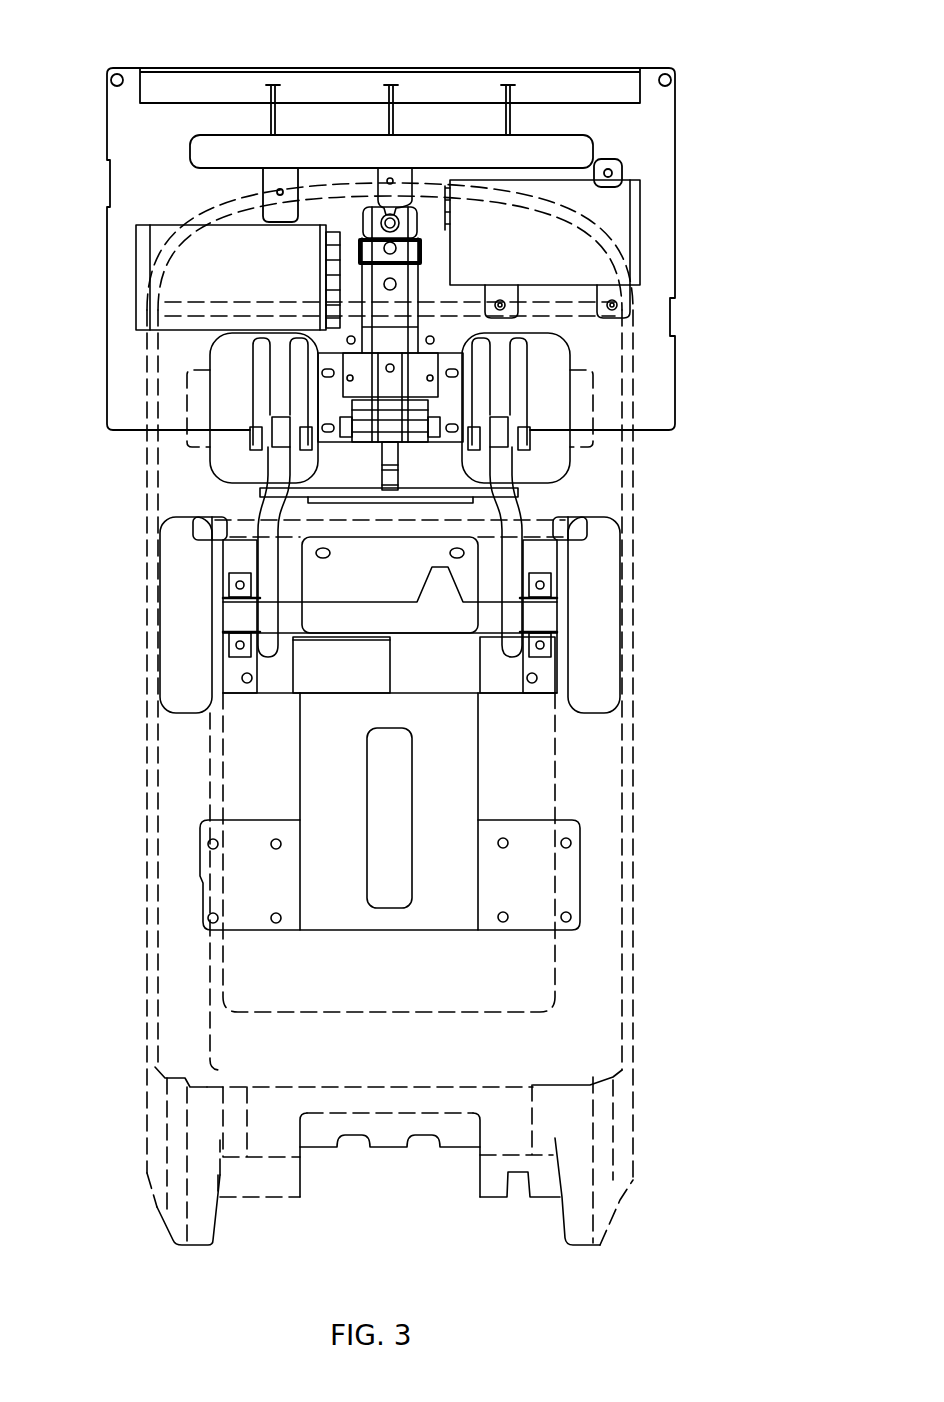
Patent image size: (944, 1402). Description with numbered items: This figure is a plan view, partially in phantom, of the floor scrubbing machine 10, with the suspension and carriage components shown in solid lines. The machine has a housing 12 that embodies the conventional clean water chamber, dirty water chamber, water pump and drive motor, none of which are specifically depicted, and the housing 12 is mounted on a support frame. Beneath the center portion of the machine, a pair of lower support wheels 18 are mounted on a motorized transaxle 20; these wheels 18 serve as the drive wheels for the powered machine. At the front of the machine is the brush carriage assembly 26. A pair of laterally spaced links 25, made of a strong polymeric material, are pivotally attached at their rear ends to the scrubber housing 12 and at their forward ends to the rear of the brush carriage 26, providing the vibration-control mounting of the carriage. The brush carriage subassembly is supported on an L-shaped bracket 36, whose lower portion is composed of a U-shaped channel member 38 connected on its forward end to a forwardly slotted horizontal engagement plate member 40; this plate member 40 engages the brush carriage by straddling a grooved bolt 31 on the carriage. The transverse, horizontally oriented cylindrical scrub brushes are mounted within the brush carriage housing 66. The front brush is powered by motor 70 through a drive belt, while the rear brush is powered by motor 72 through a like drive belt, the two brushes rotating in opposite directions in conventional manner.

The floor scrubbing machine 10 is at (740, 421).
The housing 12 is at (632, 748).
The lower support wheels 18 is at (592, 612).
The motorized transaxle 20 is at (440, 653).
The links 25 is at (280, 462).
The brush carriage assembly 26 is at (680, 62).
The grooved bolt 31 is at (392, 178).
The L-shaped bracket 36 is at (360, 258).
The U-shaped channel member 38 is at (400, 283).
The horizontal engagement plate member 40 is at (370, 208).
The brush carriage housing 66 is at (530, 82).
The motor 70 is at (618, 200).
The motor 72 is at (148, 243).